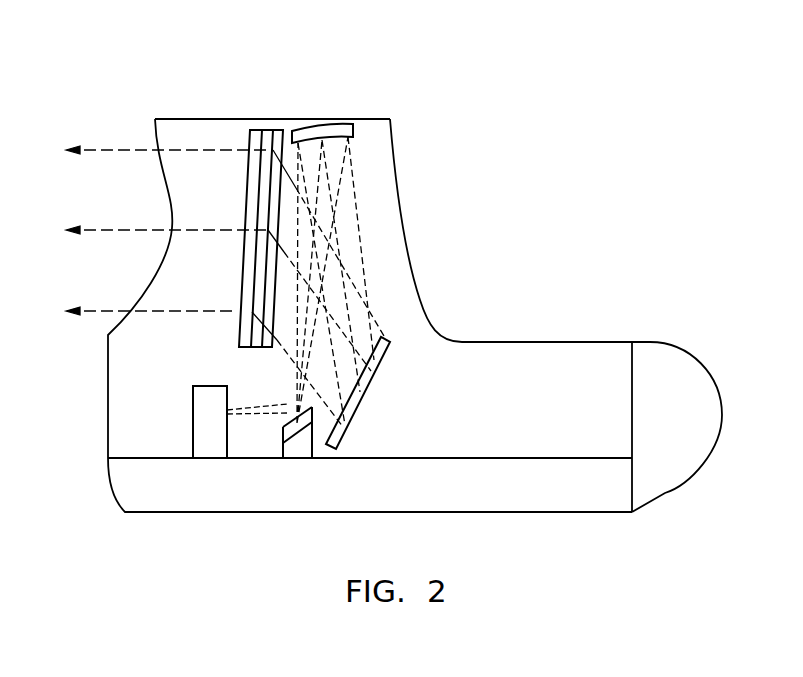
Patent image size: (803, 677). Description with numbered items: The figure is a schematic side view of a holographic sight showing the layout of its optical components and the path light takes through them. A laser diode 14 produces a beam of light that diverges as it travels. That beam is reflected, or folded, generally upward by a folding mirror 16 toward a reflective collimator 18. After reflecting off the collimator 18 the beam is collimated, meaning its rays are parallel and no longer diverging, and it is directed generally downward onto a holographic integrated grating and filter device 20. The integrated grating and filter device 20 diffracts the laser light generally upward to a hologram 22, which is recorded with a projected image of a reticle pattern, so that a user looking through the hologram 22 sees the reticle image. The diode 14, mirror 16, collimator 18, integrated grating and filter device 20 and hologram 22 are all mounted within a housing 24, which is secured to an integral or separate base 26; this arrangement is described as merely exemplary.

The laser diode 14 is at (193, 411).
The folding mirror 16 is at (299, 416).
The reflective collimator 18 is at (340, 137).
The holographic integrated grating and filter device 20 is at (358, 403).
The hologram 22 is at (265, 137).
The housing 24 is at (130, 372).
The base 26 is at (532, 480).